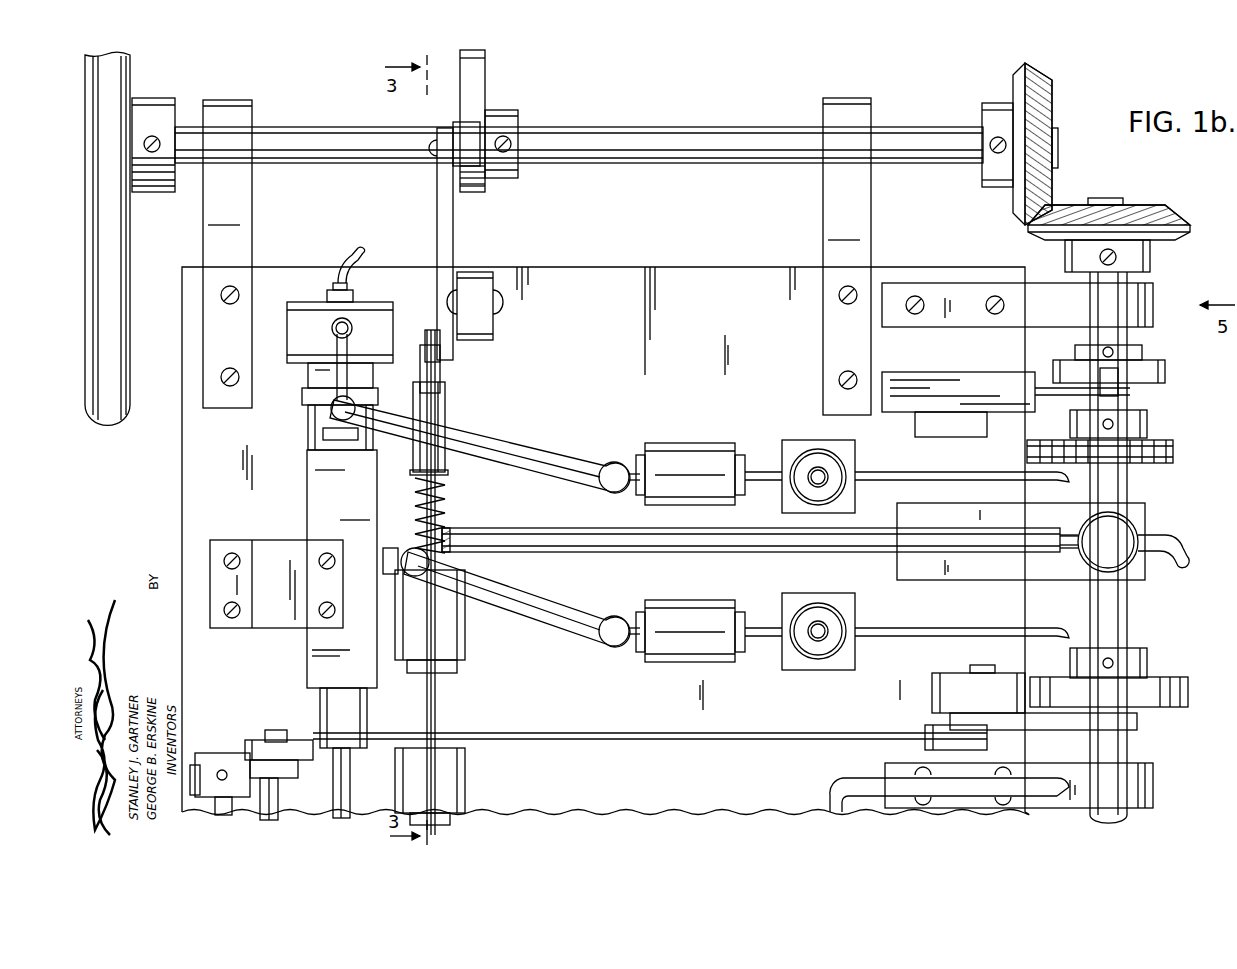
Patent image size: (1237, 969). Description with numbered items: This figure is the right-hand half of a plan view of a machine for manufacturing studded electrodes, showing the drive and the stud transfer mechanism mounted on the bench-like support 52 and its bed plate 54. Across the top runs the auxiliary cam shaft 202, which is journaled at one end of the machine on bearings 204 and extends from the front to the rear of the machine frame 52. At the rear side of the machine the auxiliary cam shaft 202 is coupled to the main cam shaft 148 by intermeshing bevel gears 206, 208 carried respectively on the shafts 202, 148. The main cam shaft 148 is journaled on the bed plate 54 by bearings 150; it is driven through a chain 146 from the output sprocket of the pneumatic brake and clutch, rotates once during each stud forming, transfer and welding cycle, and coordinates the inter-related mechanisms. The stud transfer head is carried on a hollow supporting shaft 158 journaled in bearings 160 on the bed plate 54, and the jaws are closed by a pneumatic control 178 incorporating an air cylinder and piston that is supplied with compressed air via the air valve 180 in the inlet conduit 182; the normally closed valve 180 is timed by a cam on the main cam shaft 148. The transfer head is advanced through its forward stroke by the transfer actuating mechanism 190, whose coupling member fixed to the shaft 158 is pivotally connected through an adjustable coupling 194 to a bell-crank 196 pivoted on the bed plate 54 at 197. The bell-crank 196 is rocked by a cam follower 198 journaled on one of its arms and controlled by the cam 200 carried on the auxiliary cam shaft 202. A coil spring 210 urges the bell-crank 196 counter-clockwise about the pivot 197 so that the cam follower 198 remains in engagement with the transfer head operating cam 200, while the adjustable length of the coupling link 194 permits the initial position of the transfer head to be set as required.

The bench-like support 52 is at (683, 280).
The bed plate 54 is at (732, 274).
The chain 146 is at (1170, 455).
The main cam shaft 148 is at (1128, 614).
The bearings 150 is at (1152, 297).
The hollow supporting shaft 158 is at (448, 715).
The bearings 160 is at (465, 782).
The pneumatic control 178 is at (462, 646).
The air valve 180 is at (1095, 556).
The inlet conduit 182 is at (1177, 553).
The transfer actuating mechanism 190 is at (445, 381).
The adjustable coupling 194 is at (445, 506).
The bell-crank 196 is at (437, 232).
The pivot 197 is at (432, 310).
The cam follower 198 is at (470, 155).
The cam 200 is at (480, 90).
The auxiliary cam shaft 202 is at (597, 133).
The bearings 204 is at (248, 110).
The bevel gear 206 is at (1046, 86).
The bevel gear 208 is at (1070, 203).
The coil spring 210 is at (445, 525).